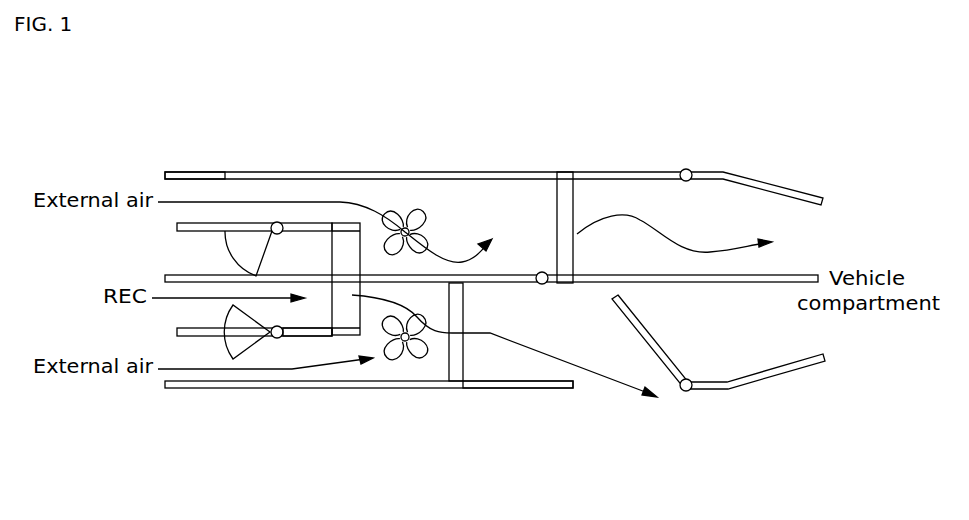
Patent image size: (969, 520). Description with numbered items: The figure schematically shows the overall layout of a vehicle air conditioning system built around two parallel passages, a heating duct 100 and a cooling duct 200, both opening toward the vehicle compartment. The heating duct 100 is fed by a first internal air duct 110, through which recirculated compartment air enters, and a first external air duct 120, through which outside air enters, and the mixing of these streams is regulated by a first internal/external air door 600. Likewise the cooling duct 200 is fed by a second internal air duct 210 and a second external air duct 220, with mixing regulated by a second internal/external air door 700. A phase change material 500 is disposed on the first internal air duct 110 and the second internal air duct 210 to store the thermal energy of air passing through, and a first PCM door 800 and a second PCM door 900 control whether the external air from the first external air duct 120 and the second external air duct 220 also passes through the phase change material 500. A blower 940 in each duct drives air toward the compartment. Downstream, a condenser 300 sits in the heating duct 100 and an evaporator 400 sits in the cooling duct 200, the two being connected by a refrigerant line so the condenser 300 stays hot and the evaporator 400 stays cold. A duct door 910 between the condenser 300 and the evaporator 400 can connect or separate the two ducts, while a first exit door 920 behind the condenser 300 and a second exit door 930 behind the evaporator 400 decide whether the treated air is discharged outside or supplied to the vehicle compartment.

The heating duct 100 is at (473, 212).
The first internal air duct 110 is at (203, 252).
The first external air duct 120 is at (242, 190).
The cooling duct 200 is at (537, 367).
The second internal air duct 210 is at (192, 309).
The second external air duct 220 is at (193, 375).
The condenser 300 is at (557, 222).
The evaporator 400 is at (423, 362).
The phase change material 500 is at (345, 237).
The first internal/external air door 600 is at (242, 255).
The second internal/external air door 700 is at (240, 347).
The first PCM door 800 is at (305, 228).
The second PCM door 900 is at (312, 335).
The duct door 910 is at (507, 280).
The first exit door 920 is at (663, 172).
The second exit door 930 is at (644, 342).
The blower 940 is at (395, 210).